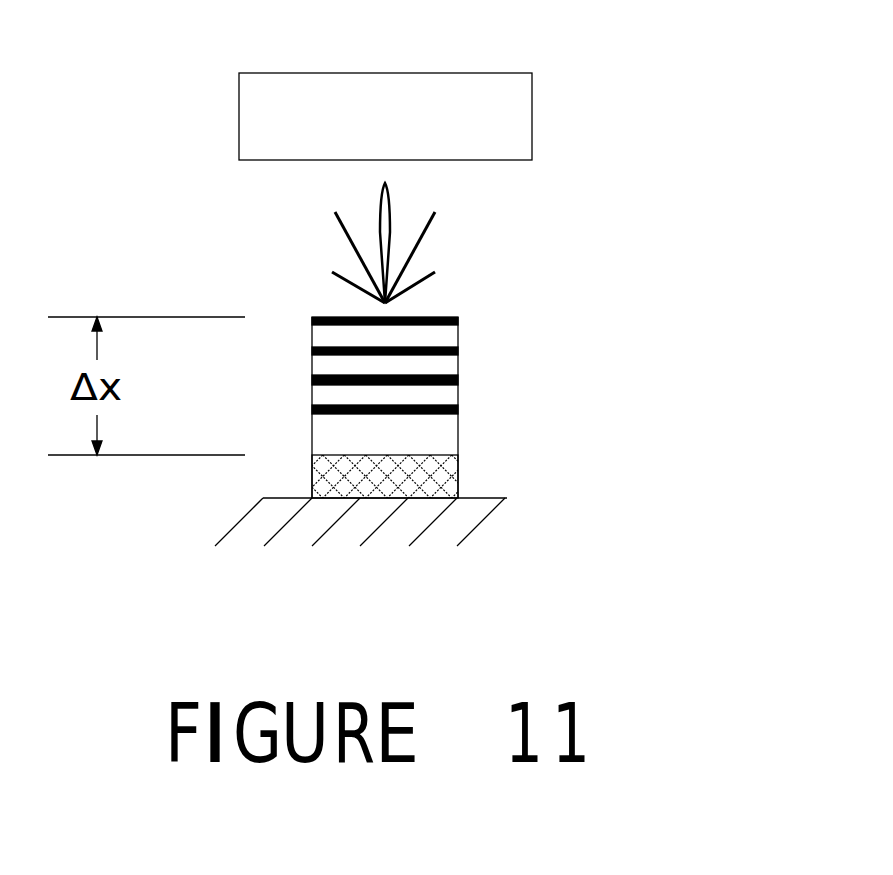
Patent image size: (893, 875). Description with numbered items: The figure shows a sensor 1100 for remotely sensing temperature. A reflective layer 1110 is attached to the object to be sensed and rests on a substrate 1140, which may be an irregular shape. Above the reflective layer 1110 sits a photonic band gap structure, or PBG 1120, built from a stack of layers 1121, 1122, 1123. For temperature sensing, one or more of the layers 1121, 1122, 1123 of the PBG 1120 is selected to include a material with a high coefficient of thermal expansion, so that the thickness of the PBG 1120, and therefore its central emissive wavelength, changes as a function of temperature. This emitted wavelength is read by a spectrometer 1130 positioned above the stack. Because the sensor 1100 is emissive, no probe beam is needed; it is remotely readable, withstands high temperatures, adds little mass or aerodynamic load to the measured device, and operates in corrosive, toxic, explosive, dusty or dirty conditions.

The sensor 1100 is at (440, 490).
The reflective layer 1110 is at (458, 473).
The PBG 1120 is at (388, 388).
The layer 1121 is at (458, 330).
The layer 1122 is at (458, 379).
The layer 1123 is at (458, 426).
The spectrometer 1130 is at (532, 142).
The substrate 1140 is at (485, 527).